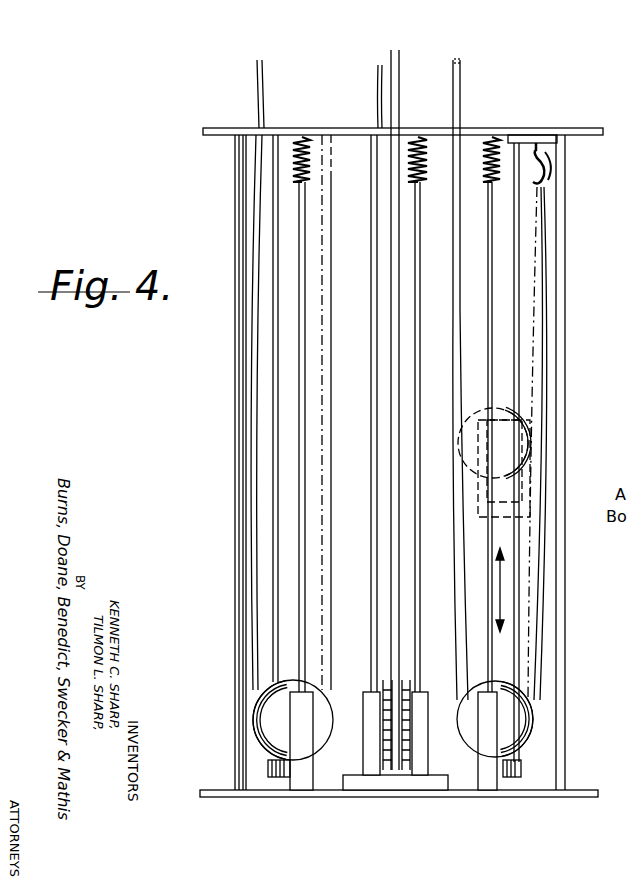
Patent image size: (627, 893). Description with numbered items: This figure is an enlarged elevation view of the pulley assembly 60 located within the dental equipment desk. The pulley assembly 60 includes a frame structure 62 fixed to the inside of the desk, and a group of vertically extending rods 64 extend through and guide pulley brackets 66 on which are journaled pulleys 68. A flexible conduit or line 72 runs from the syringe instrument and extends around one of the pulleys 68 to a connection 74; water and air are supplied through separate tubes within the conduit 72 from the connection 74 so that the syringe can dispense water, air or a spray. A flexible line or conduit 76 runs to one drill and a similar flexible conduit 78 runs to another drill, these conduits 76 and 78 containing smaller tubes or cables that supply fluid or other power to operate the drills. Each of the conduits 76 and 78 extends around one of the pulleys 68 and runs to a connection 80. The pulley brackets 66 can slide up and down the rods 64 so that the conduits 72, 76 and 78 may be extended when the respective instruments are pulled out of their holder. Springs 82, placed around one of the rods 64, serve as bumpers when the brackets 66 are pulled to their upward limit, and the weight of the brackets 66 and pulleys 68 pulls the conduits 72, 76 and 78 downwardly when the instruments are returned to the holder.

The pulley assembly 60 is at (232, 430).
The frame structure 62 is at (236, 556).
The vertically extending rods 64 is at (301, 384).
The pulley brackets 66 is at (297, 790).
The pulleys 68 is at (268, 740).
The flexible conduit or line 72 is at (461, 72).
The connection 74 is at (538, 145).
The flexible line or conduit 76 is at (399, 76).
The flexible conduit 78 is at (263, 73).
The connection 80 is at (368, 378).
The springs 82 is at (305, 148).